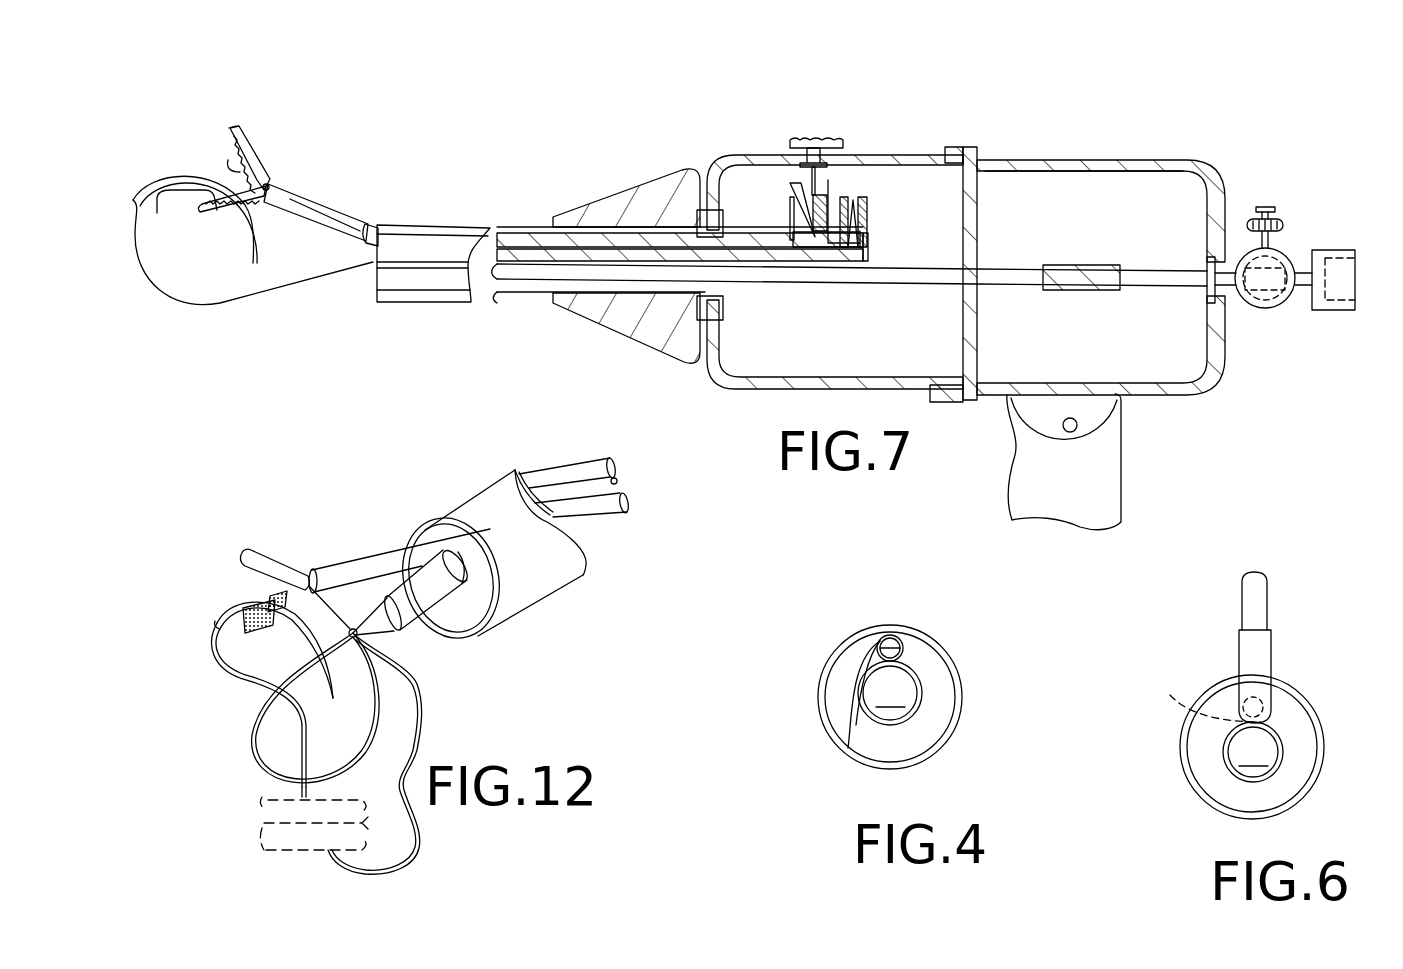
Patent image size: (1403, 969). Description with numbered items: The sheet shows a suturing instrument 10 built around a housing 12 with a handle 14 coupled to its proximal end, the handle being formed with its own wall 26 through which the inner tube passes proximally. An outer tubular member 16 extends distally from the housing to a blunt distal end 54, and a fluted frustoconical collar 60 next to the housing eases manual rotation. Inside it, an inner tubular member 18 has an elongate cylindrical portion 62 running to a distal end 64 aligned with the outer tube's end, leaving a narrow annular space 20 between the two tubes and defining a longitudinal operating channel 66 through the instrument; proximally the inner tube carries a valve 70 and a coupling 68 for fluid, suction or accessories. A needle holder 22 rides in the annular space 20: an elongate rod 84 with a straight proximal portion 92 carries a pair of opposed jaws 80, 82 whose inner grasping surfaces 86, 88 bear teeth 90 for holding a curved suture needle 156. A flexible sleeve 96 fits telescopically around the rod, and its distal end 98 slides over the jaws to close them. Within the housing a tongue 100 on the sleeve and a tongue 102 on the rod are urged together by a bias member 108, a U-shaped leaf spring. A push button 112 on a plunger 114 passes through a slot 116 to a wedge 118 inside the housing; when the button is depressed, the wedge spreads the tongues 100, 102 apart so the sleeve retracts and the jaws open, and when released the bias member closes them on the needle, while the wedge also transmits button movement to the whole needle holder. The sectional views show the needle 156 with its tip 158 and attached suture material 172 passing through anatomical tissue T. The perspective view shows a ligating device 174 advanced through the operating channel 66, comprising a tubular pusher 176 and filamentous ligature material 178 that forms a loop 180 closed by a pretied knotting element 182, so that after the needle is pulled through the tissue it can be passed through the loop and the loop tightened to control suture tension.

In FIG. 7, the suturing instrument 10 is at (1231, 173).
In FIG. 7, the housing 12 is at (706, 151).
In FIG. 7, the handle 14 is at (1129, 160).
In FIG. 7, the outer tubular member 16 is at (434, 226).
In FIG. 12, the outer tubular member 16 is at (482, 484).
In FIG. 4, the outer tubular member 16 is at (833, 648).
In FIG. 6, the outer tubular member 16 is at (1226, 688).
In FIG. 7, the inner tubular member 18 is at (931, 261).
In FIG. 12, the inner tubular member 18 is at (468, 590).
In FIG. 4, the inner tubular member 18 is at (909, 660).
In FIG. 6, the inner tubular member 18 is at (1291, 745).
In FIG. 4, the annular space 20 is at (925, 656).
In FIG. 6, the annular space 20 is at (1205, 776).
In FIG. 7, the needle holder 22 is at (246, 118).
In FIG. 12, the needle holder 22 is at (246, 545).
In FIG. 4, the needle holder 22 is at (887, 633).
In FIG. 6, the needle holder 22 is at (1274, 593).
In FIG. 7, the housing wall 26 is at (1003, 163).
In FIG. 7, the distal end of outer tubular member 54 is at (367, 233).
In FIG. 7, the frustoconical collar 60 is at (579, 214).
In FIG. 7, the elongate cylindrical portion 62 is at (990, 287).
In FIG. 12, the distal end of inner tubular member 64 is at (463, 559).
In FIG. 7, the operating channel 66 is at (1074, 265).
In FIG. 6, the operating channel 66 is at (1180, 716).
In FIG. 7, the coupling 68 is at (1335, 312).
In FIG. 7, the valve 70 is at (1268, 311).
In FIG. 4, the needle holding member 80 is at (870, 662).
In FIG. 4, the needle holding member 82 is at (848, 745).
In FIG. 7, the elongate rod 84 is at (536, 236).
In FIG. 7, the inner grasping surface 86 is at (228, 135).
In FIG. 7, the inner grasping surface 88 is at (198, 192).
In FIG. 7, the teeth 90 is at (230, 172).
In FIG. 7, the proximal portion of rod 92 is at (636, 248).
In FIG. 7, the flexible sleeve 96 is at (320, 206).
In FIG. 7, the distal end of flexible sleeve 98 is at (264, 185).
In FIG. 7, the tongue 100 is at (810, 238).
In FIG. 7, the tongue 102 is at (790, 205).
In FIG. 7, the bias member 108 is at (866, 199).
In FIG. 7, the push button 112 is at (818, 136).
In FIG. 7, the plunger 114 is at (827, 177).
In FIG. 7, the slot 116 is at (905, 159).
In FIG. 7, the wedge 118 is at (800, 184).
In FIG. 7, the curved suture needle 156 is at (217, 228).
In FIG. 12, the curved suture needle 156 is at (223, 607).
In FIG. 7, the needle tip 158 is at (257, 248).
In FIG. 7, the suture material 172 is at (222, 303).
In FIG. 12, the ligating device 174 is at (417, 626).
In FIG. 12, the tubular pusher 176 is at (398, 583).
In FIG. 12, the ligature material 178 is at (255, 765).
In FIG. 12, the loop 180 is at (252, 722).
In FIG. 12, the knotting element 182 is at (316, 575).
In FIG. 12, the anatomical tissue T is at (265, 806).